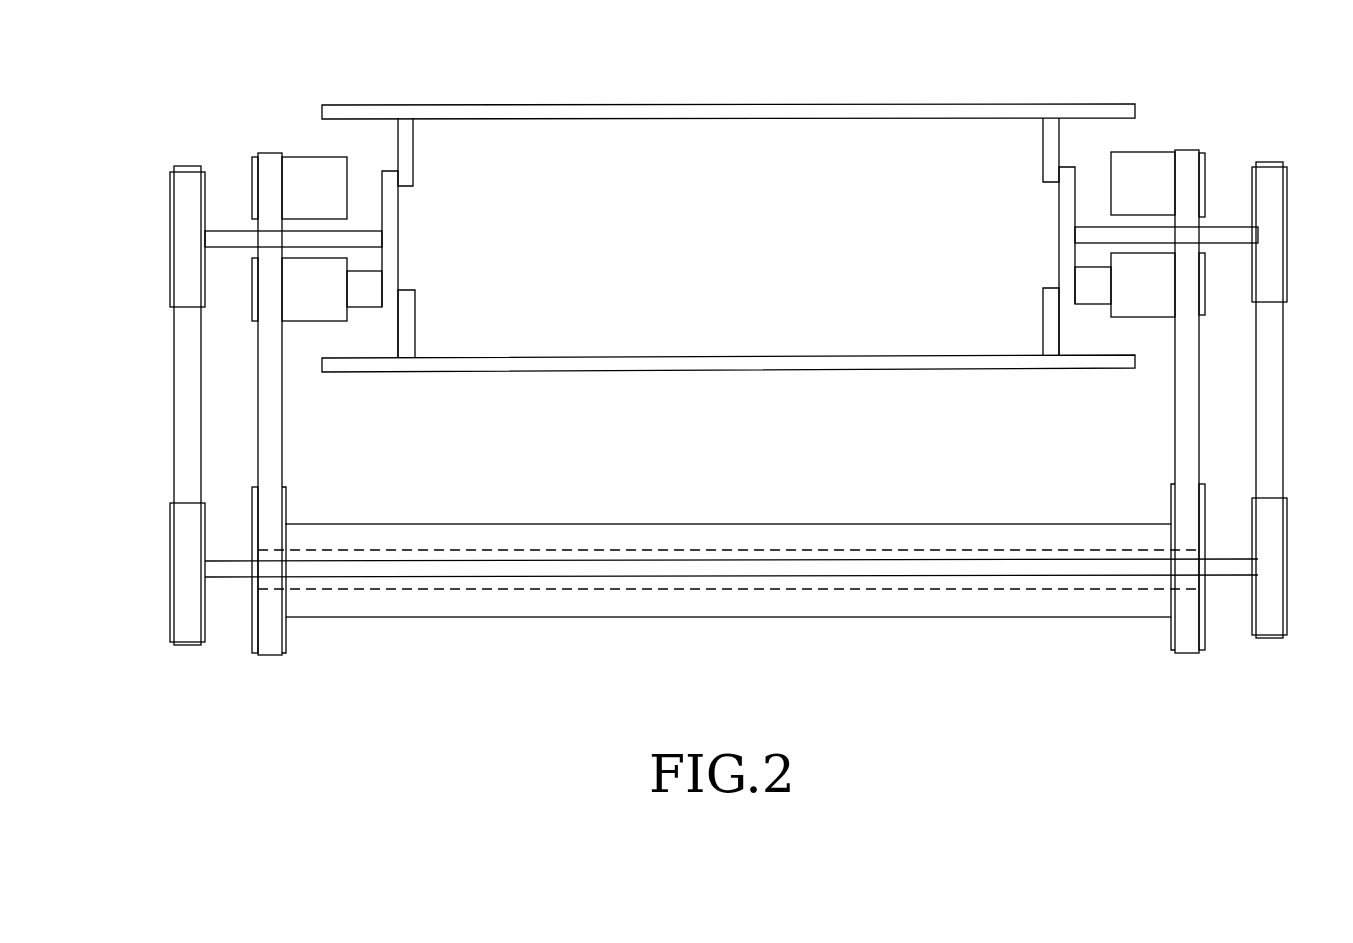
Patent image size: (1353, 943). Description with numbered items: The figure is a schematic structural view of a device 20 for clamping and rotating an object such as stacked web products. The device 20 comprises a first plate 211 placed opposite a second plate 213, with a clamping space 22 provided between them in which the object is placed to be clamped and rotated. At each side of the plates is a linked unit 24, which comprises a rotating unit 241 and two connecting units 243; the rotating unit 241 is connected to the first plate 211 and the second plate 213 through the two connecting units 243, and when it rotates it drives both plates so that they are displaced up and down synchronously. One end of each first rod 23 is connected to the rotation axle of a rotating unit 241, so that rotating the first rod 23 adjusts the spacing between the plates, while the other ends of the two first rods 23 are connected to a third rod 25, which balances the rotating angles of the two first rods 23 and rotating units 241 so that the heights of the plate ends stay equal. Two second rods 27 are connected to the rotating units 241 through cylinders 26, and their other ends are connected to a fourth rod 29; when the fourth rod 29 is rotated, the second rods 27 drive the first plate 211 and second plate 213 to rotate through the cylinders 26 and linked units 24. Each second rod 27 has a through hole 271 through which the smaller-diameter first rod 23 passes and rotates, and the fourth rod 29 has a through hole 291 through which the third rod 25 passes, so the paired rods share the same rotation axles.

The device 20 is at (158, 78).
The clamping space 22 is at (704, 239).
The first plate 211 is at (860, 111).
The second plate 213 is at (865, 362).
The first rod 23 is at (208, 240).
The linked unit 24 is at (501, 165).
The rotating unit 241 is at (395, 227).
The connecting unit 243 is at (407, 167).
The third rod 25 is at (210, 571).
The cylinder 26 is at (363, 305).
The second rod 27 is at (293, 162).
The through hole 271 is at (309, 256).
The fourth rod 29 is at (677, 533).
The through hole 291 is at (498, 553).